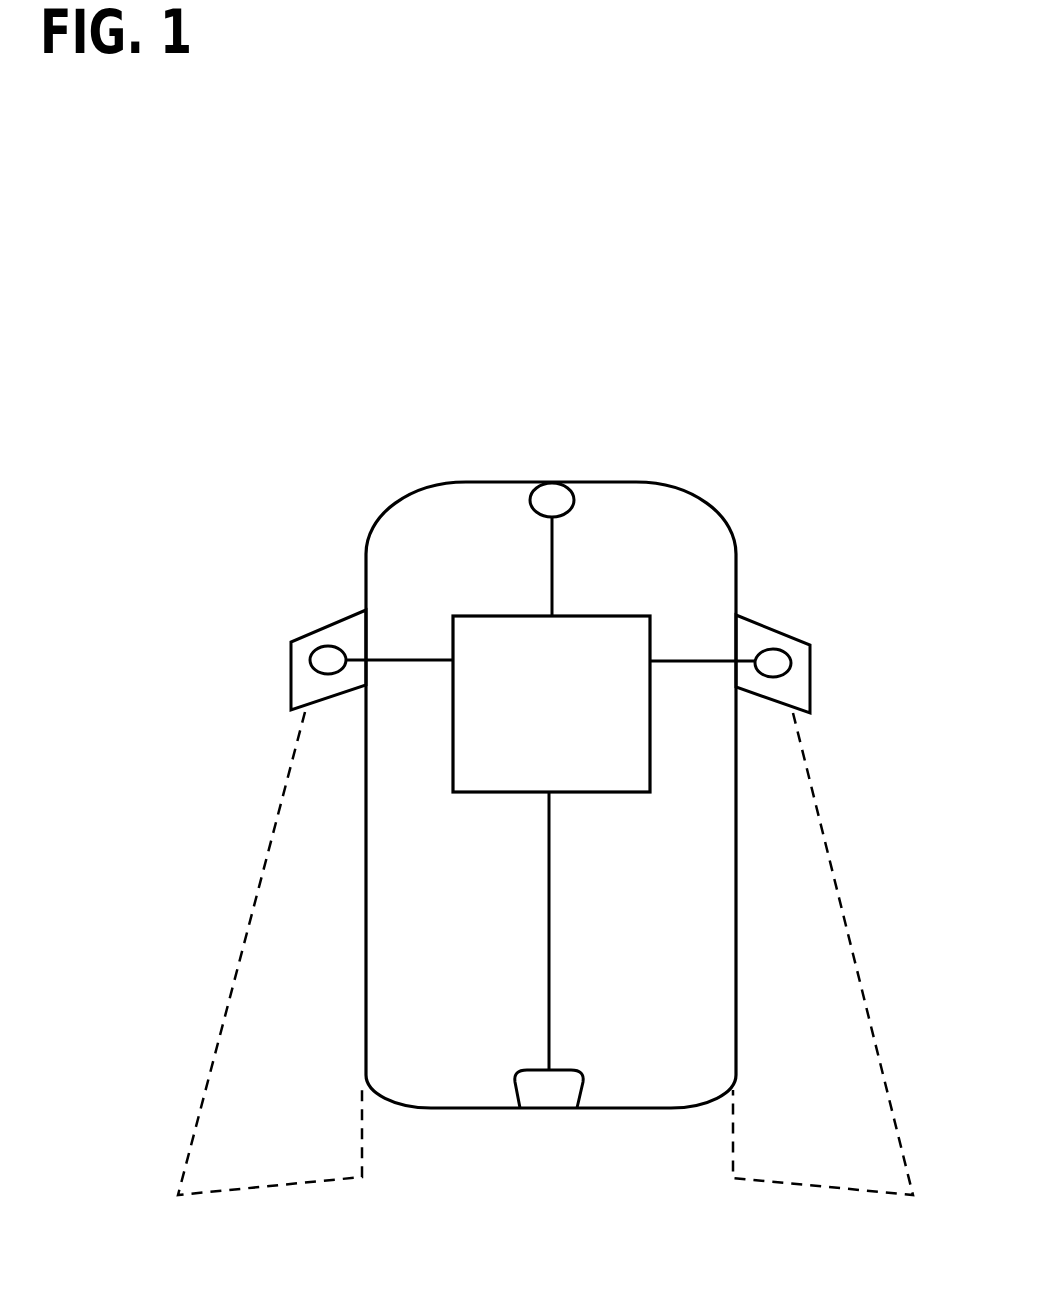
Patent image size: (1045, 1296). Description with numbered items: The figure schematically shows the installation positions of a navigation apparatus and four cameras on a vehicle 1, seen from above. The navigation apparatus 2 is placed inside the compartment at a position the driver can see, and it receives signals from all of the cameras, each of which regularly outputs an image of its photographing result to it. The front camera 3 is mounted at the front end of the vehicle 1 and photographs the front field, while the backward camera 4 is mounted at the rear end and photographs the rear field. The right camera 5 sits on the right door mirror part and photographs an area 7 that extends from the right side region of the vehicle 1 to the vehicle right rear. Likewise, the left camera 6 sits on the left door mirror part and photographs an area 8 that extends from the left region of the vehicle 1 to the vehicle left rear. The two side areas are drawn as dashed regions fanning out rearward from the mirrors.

The vehicle 1 is at (413, 490).
The navigation apparatus 2 is at (650, 750).
The front camera 3 is at (552, 494).
The backward camera 4 is at (549, 1098).
The right camera 5 is at (773, 650).
The left camera 6 is at (330, 647).
The area 7 is at (820, 937).
The area 8 is at (275, 932).